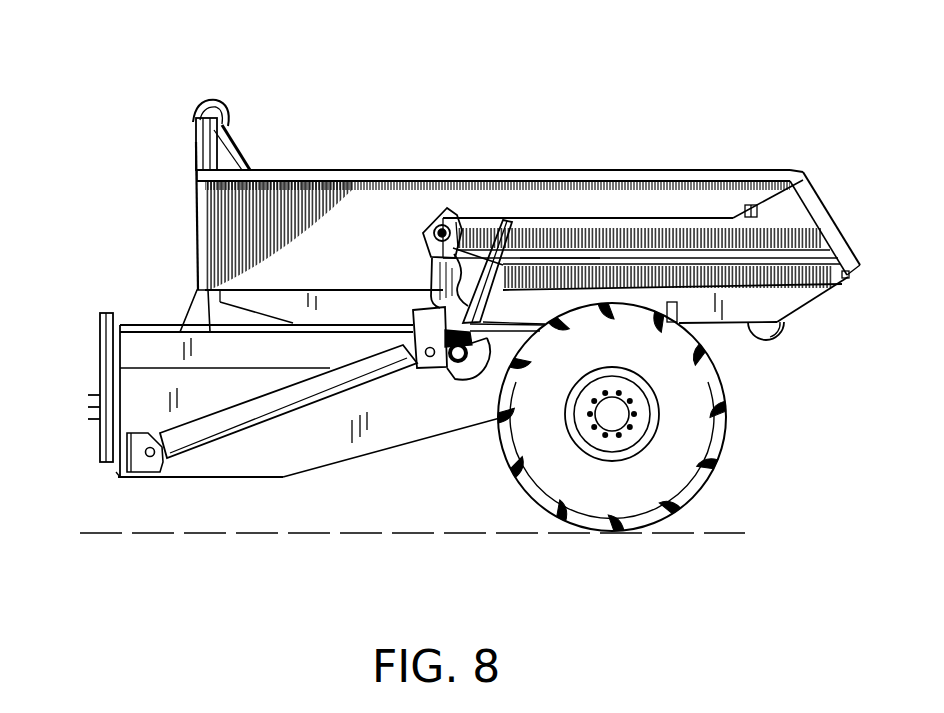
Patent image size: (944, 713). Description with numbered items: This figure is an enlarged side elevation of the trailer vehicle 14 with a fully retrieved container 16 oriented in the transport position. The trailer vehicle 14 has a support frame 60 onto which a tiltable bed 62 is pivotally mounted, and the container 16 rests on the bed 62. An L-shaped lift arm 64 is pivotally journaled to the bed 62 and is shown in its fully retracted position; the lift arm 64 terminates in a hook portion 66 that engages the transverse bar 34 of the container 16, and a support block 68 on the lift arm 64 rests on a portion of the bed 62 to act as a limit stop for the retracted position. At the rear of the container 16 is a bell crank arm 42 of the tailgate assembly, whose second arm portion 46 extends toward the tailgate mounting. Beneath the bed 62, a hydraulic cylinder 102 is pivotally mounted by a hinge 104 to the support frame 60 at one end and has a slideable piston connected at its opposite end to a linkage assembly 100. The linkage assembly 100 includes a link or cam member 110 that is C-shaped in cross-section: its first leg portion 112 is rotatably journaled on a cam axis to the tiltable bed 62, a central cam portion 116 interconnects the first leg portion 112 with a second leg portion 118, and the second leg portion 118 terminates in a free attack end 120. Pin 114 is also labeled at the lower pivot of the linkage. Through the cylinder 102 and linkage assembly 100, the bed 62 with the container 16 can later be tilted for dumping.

The container 16 is at (715, 47).
The trailer vehicle 14 is at (483, 524).
The bell crank arm 42 is at (657, 250).
The transverse bar 34 is at (197, 142).
The hook portion 66 is at (224, 113).
The lift arm 64 is at (203, 227).
The support block 68 is at (196, 291).
The tiltable bed 62 is at (167, 348).
The link or cam member 110 is at (413, 312).
The second leg portion 118 is at (432, 306).
The free attack end 120 is at (450, 217).
The second arm portion 46 is at (507, 218).
The central cam portion 116 is at (515, 262).
The first leg portion 112 is at (552, 222).
The hinge 104 is at (133, 472).
The hydraulic cylinder 102 is at (200, 432).
The support frame 60 is at (297, 457).
The lower pivot pin 114 is at (443, 365).
The linkage assembly 100 is at (466, 412).